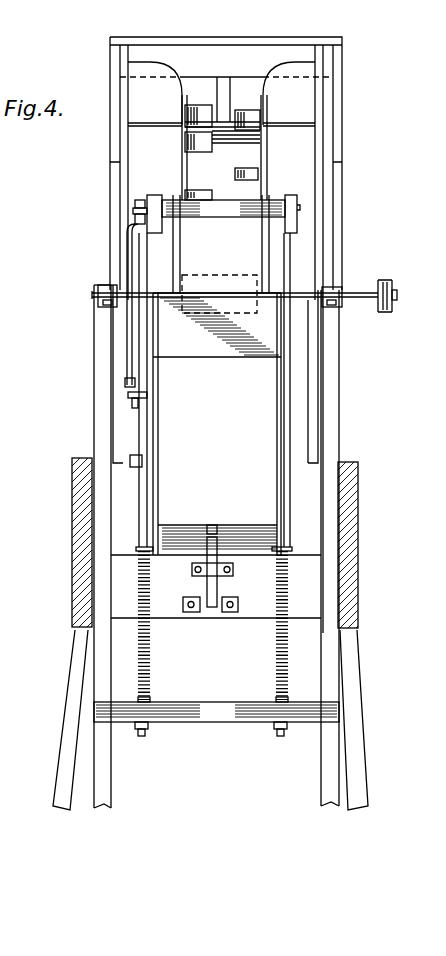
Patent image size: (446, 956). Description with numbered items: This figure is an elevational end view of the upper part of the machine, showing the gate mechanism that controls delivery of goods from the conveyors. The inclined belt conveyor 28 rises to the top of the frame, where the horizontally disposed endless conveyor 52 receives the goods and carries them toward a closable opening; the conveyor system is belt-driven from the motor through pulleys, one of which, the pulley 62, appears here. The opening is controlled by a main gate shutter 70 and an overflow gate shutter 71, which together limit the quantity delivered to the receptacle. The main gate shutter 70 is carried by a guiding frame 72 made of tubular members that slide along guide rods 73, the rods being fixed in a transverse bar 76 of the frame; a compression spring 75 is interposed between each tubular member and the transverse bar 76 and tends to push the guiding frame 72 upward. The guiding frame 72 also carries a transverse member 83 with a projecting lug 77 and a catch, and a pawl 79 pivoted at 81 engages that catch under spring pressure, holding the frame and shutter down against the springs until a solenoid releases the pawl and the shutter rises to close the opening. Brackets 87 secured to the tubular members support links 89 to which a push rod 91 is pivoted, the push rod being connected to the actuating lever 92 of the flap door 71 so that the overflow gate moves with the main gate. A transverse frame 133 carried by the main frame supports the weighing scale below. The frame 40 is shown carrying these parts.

The inclined belt conveyor 28 is at (248, 152).
The frame 40 is at (330, 433).
The horizontally disposed endless conveyor 52 is at (205, 282).
The pulley 62 is at (392, 305).
The main gate shutter 70 is at (207, 348).
The overflow gate shutter 71 is at (209, 217).
The guiding frame 72 is at (291, 400).
The guide rods 73 is at (278, 570).
The spring 75 is at (152, 660).
The transverse bar 76 is at (215, 718).
The projecting lug 77 is at (210, 525).
The pawl 79 is at (205, 585).
The pivot 81 is at (207, 606).
The transverse member 83 is at (243, 530).
The brackets 87 is at (147, 399).
The links 89 is at (140, 384).
The push rod 91 is at (128, 330).
The actuating lever 92 is at (135, 210).
The transverse frame 133 is at (348, 516).